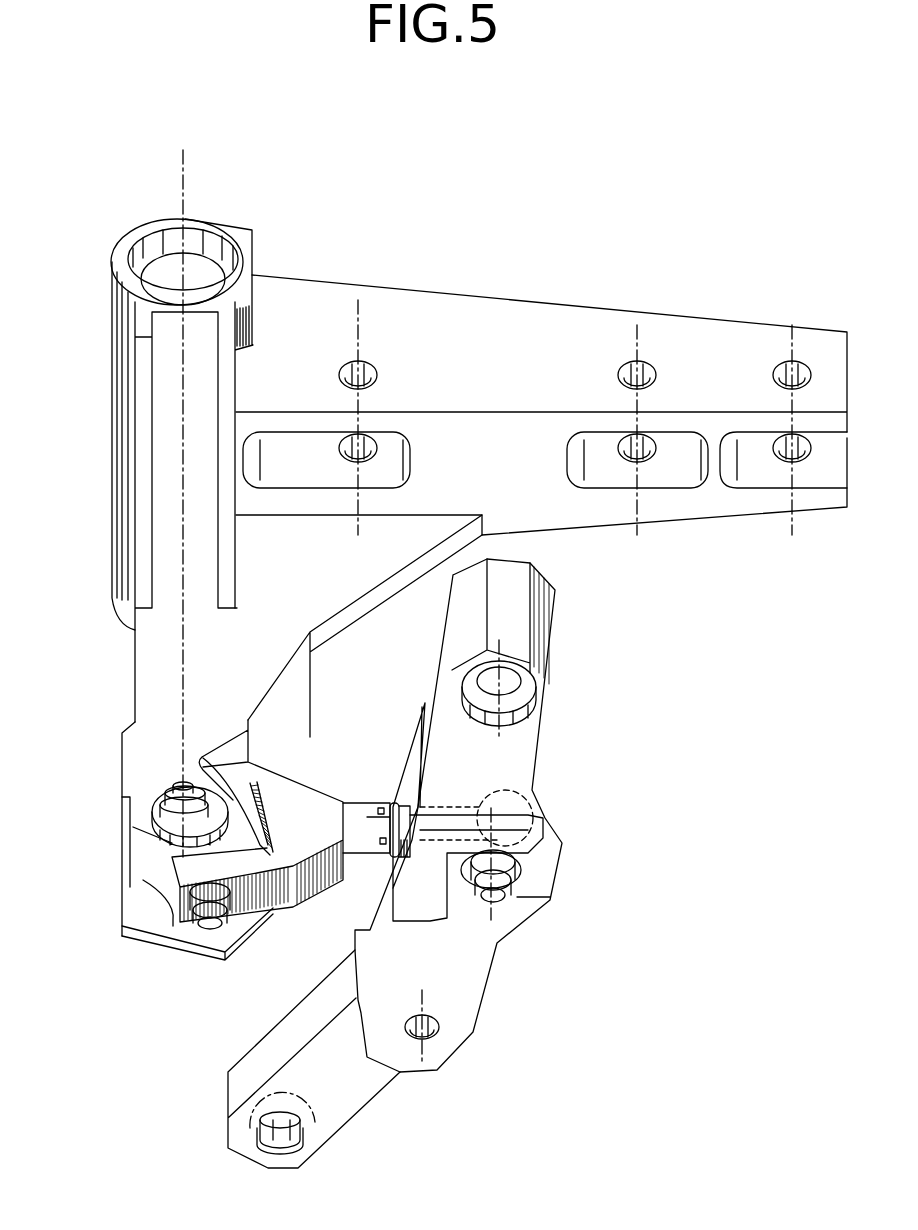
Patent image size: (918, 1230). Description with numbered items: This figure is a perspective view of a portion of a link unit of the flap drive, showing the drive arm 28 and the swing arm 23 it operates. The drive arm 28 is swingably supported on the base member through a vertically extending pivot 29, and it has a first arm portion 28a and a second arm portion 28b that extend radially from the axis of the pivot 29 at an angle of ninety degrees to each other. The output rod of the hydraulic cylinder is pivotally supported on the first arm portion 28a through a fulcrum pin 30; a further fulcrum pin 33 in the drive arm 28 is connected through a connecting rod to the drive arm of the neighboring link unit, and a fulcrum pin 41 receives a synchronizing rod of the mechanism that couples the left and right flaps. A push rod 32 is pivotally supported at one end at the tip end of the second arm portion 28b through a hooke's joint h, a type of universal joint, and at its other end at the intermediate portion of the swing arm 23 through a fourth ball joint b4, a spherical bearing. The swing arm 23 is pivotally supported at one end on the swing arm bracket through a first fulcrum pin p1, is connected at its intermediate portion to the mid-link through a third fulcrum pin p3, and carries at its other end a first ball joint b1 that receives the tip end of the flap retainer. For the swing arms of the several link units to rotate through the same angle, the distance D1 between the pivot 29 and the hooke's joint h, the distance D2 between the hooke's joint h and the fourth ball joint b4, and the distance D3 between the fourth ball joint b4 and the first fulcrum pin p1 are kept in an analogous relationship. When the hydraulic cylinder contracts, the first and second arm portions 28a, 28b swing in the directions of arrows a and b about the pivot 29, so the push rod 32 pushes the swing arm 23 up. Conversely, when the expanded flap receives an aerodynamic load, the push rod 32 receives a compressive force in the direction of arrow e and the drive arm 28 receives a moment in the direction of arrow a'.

The pivot 29 is at (182, 178).
The drive arm 28 is at (466, 278).
The first arm portion 28a is at (590, 318).
The second arm portion 28b is at (140, 748).
The fulcrum pin 33 is at (358, 327).
The fulcrum pin 30 is at (637, 345).
The fulcrum pin 41 is at (792, 345).
The push rod 32 is at (313, 793).
The swing arm 23 is at (480, 977).
The first fulcrum pin p1 is at (488, 735).
The third fulcrum pin p3 is at (422, 1050).
The first ball joint b1 is at (313, 1120).
The fourth ball joint b4 is at (540, 838).
The direction of swinging of the first arm portion a is at (469, 351).
The direction of moment on the drive arm a' is at (405, 378).
The direction of swinging of the second arm portion b is at (120, 970).
The direction of compressive force on the push rod e is at (370, 817).
The hooke's joint h is at (145, 896).
The distance between the pivot and the hooke's joint D1 is at (195, 851).
The distance between the hooke's joint and the fourth ball joint D2 is at (225, 950).
The distance between the fourth ball joint and the first fulcrum pin D3 is at (477, 644).